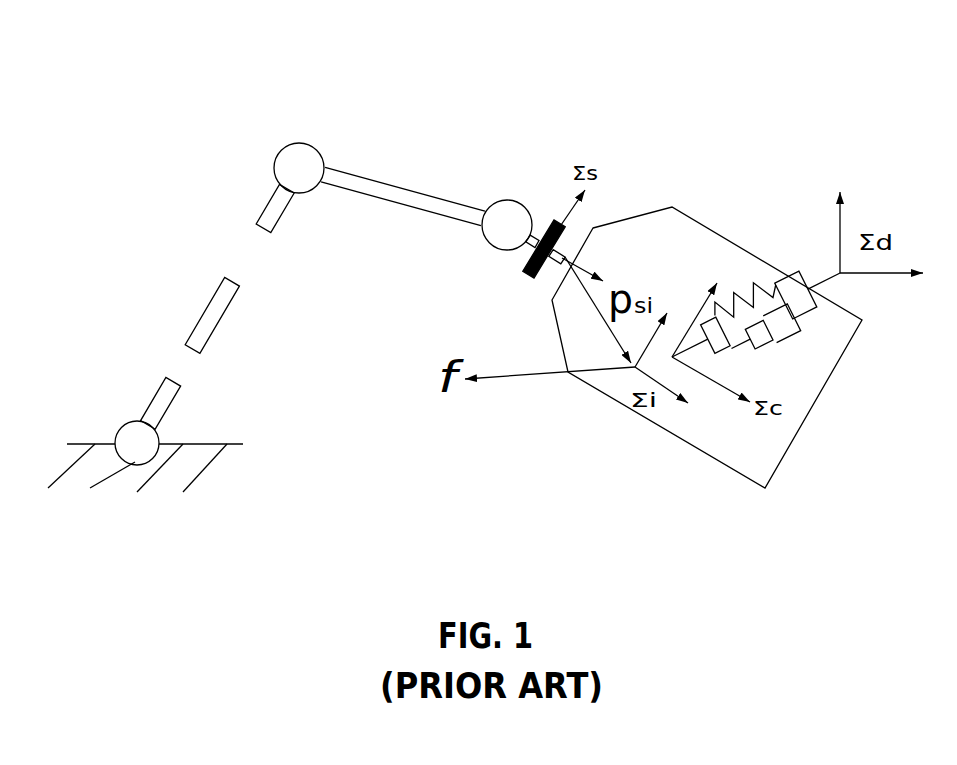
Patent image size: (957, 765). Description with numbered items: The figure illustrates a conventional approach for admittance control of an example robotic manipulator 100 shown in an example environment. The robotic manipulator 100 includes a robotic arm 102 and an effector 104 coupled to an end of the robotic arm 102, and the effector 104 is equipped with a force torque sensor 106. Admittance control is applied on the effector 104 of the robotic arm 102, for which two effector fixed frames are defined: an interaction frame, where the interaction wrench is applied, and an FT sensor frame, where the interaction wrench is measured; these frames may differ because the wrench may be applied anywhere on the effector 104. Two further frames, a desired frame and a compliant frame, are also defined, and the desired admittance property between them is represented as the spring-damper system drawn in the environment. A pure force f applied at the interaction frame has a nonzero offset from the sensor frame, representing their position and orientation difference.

The robotic manipulator 100 is at (176, 80).
The robotic arm 102 is at (402, 195).
The effector 104 is at (565, 253).
The force torque (FT) sensor 106 is at (527, 268).